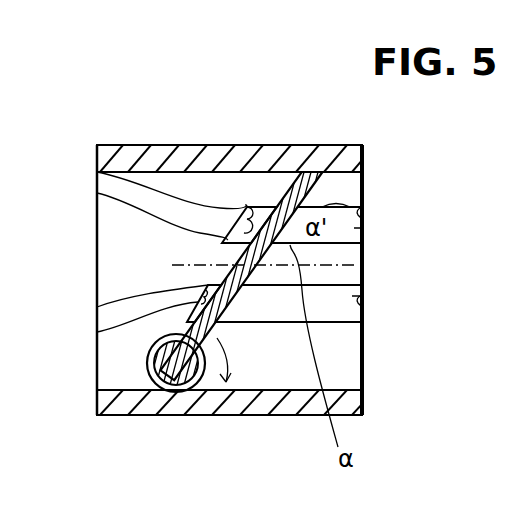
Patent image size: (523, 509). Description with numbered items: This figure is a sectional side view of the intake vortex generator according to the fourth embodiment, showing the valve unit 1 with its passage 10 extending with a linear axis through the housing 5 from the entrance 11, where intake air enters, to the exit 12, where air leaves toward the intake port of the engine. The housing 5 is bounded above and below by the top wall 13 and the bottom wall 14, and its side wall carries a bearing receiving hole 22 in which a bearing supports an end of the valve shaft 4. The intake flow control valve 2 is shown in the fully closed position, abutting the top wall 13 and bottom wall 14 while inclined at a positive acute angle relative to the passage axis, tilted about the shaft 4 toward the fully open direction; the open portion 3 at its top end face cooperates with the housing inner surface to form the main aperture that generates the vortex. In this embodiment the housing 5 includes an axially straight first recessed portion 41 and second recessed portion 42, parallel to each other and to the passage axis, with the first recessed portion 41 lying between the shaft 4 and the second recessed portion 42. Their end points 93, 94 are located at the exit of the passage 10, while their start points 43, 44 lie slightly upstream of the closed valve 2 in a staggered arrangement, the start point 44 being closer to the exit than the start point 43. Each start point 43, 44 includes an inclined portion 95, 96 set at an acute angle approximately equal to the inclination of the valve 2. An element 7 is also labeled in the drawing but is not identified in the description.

The valve unit 1 is at (76, 105).
The intake flow control valve 2 is at (256, 190).
The open portion 3 is at (303, 173).
The valve shaft 4 is at (158, 392).
The housing 5 is at (147, 143).
The engaging projections 7 is at (355, 296).
The passage 10 is at (215, 197).
The entrance 11 is at (105, 248).
The exit 12 is at (355, 362).
The top wall 13 is at (190, 145).
The bottom wall 14 is at (241, 408).
The bearing receiving hole 22 is at (148, 372).
The first recessed portion 41 is at (345, 312).
The second recessed portion 42 is at (343, 209).
The start point of first recessed portion 43 is at (97, 307).
The start point of second recessed portion 44 is at (97, 193).
The end point of first recessed portion 93 is at (363, 298).
The end point of second recessed portion 94 is at (363, 208).
The inclined portion 95 is at (97, 332).
The inclined portion 96 is at (97, 172).